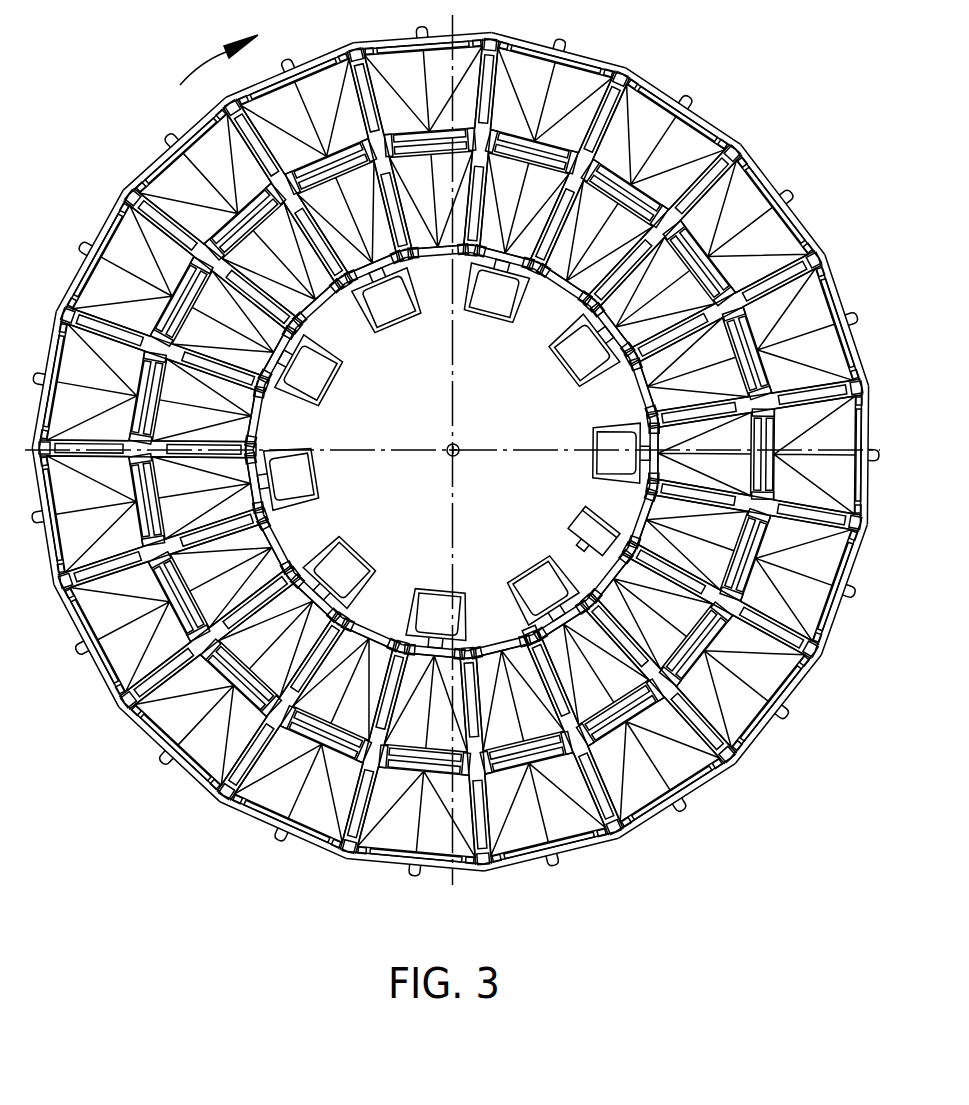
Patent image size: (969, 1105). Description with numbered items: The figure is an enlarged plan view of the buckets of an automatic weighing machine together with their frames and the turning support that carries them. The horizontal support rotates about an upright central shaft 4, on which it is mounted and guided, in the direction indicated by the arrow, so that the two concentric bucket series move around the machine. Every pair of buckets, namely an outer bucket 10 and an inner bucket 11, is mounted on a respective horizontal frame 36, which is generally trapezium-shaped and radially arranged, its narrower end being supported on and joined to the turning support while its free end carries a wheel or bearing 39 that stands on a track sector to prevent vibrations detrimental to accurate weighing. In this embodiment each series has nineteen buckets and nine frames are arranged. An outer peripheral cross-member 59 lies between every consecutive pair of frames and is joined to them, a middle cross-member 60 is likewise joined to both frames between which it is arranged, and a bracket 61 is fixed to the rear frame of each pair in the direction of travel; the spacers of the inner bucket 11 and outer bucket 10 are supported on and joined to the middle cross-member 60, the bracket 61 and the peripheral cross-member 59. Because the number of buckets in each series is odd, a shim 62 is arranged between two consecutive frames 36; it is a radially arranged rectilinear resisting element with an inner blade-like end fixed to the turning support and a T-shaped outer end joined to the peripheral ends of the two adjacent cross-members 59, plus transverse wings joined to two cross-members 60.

The upright central shaft 4 is at (459, 447).
The outer bucket 10 is at (263, 790).
The inner bucket 11 is at (345, 648).
The horizontal frame 36 is at (401, 331).
The wheel or bearing 39 is at (410, 868).
The outer peripheral cross-member 59 is at (828, 623).
The middle cross-member 60 is at (748, 510).
The bracket 61 is at (527, 630).
The shim 62 is at (579, 518).